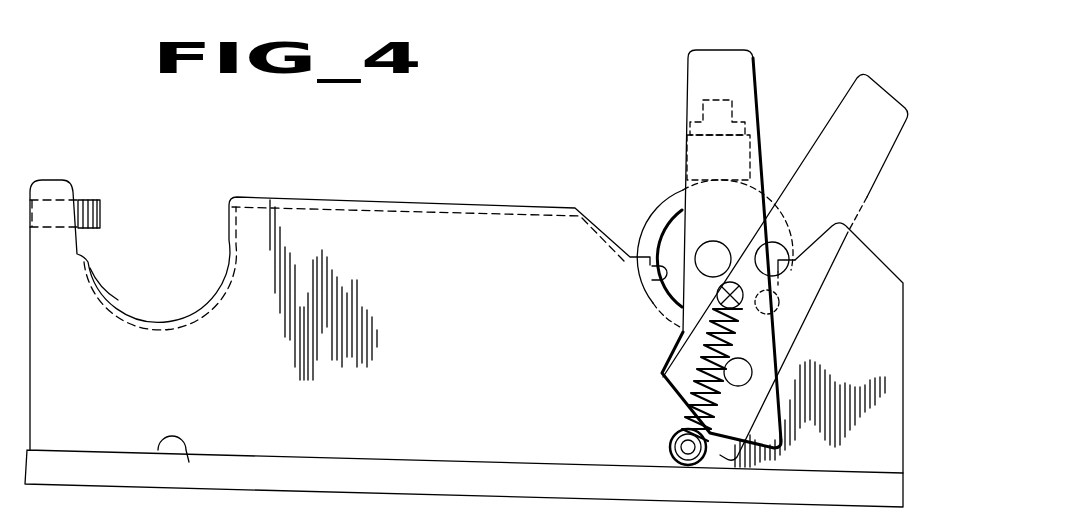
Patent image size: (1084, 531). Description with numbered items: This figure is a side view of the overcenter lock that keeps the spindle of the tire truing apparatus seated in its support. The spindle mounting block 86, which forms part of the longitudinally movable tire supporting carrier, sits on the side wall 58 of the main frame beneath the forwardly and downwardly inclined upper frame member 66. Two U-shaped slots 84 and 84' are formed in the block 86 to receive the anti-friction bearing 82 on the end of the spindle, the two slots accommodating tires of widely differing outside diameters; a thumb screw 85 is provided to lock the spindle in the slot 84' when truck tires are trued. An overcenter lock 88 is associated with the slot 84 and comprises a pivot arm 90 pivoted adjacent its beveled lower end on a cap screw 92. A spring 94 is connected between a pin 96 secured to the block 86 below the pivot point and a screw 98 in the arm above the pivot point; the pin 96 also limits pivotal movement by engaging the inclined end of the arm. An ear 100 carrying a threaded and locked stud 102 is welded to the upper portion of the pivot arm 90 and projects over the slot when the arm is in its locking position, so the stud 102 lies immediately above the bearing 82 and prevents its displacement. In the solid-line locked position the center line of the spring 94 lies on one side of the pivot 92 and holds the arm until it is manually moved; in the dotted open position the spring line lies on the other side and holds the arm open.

The side wall 58 is at (568, 488).
The upper frame member 66 is at (177, 461).
The anti-friction bearing 82 is at (668, 203).
The U-shaped slot 84 is at (626, 284).
The U-shaped slot 84' is at (101, 304).
The thumb screw 85 is at (100, 207).
The spindle mounting block 86 is at (476, 401).
The overcenter lock 88 is at (753, 52).
The pivot arm 90 is at (857, 70).
The cap screw 92 is at (747, 370).
The spring 94 is at (702, 338).
The pin 96 is at (670, 446).
The screw 98 is at (712, 302).
The ear 100 is at (752, 152).
The stud 102 is at (703, 105).